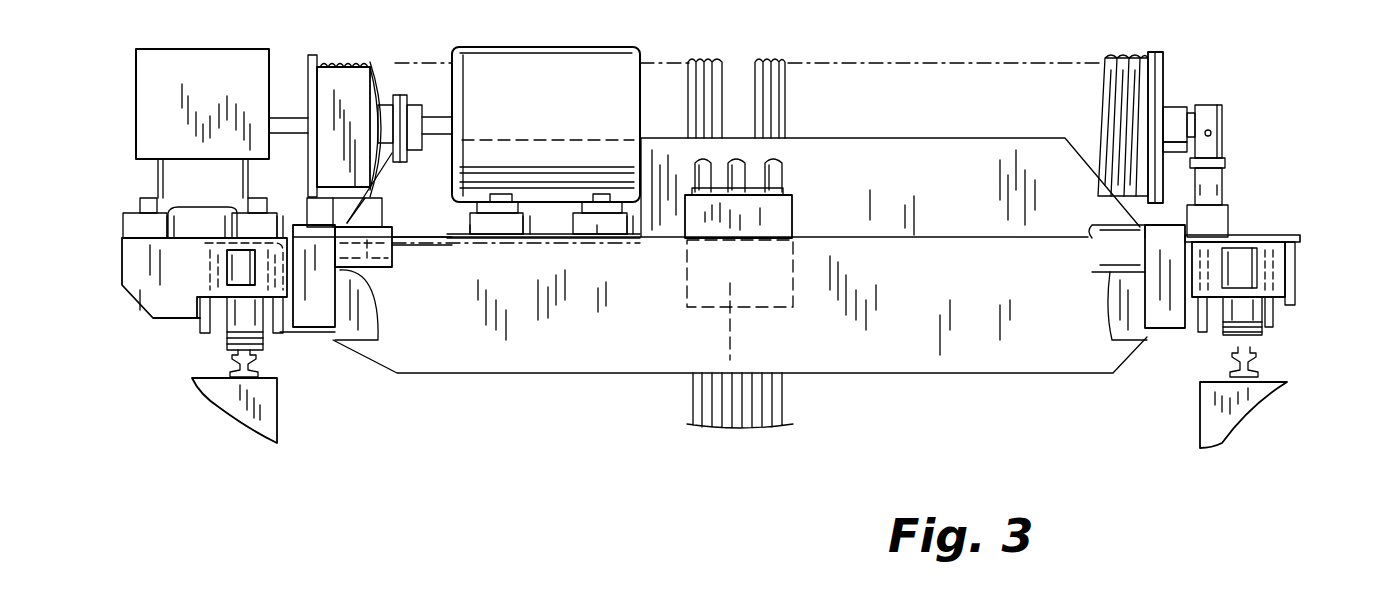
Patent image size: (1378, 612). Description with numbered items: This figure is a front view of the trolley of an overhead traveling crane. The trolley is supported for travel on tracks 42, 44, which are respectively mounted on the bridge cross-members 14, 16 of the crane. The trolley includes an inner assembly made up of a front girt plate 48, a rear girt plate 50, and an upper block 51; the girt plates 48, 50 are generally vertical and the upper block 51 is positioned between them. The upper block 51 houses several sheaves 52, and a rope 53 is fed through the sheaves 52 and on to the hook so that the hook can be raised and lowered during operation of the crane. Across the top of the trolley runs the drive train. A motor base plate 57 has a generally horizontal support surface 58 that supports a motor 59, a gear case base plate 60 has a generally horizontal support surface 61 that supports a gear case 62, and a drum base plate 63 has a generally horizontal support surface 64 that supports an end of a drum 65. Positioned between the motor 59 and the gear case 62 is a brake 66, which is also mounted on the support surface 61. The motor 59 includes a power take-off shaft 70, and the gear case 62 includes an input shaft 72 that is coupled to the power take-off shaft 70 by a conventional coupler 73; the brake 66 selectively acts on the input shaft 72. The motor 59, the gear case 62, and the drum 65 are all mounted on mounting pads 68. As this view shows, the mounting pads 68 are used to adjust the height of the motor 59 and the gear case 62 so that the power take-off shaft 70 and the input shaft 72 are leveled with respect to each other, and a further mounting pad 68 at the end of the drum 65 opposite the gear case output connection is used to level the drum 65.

The bridge cross-member 14 is at (227, 398).
The bridge cross-member 16 is at (1213, 410).
The track 42 is at (238, 360).
The track 44 is at (1247, 367).
The front girt plate 48 is at (928, 338).
The rear girt plate 50 is at (1023, 207).
The upper block 51 is at (757, 212).
The sheaves 52 is at (694, 167).
The rope 53 is at (757, 62).
The motor base plate 57 is at (549, 228).
The support surface 58 is at (452, 234).
The motor 59 is at (594, 60).
The gear case base plate 60 is at (203, 233).
The support surface 61 is at (217, 243).
The gear case 62 is at (234, 62).
The drum base plate 63 is at (1310, 233).
The support surface 64 is at (1264, 235).
The drum 65 is at (987, 93).
The brake 66 is at (350, 80).
The mounting pads 68 is at (133, 230).
The power take-off shaft 70 is at (443, 130).
The input shaft 72 is at (290, 117).
The coupler 73 is at (405, 97).